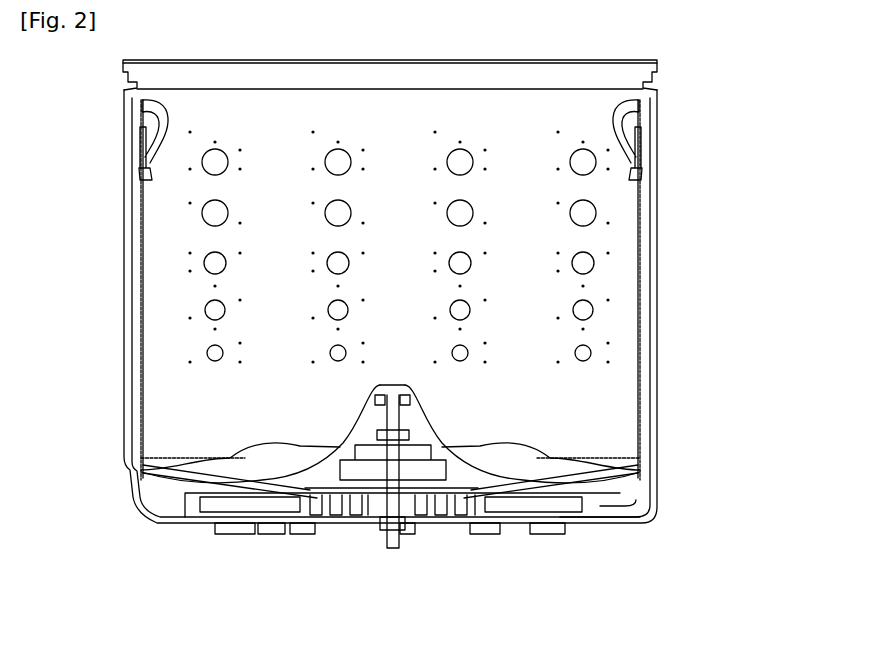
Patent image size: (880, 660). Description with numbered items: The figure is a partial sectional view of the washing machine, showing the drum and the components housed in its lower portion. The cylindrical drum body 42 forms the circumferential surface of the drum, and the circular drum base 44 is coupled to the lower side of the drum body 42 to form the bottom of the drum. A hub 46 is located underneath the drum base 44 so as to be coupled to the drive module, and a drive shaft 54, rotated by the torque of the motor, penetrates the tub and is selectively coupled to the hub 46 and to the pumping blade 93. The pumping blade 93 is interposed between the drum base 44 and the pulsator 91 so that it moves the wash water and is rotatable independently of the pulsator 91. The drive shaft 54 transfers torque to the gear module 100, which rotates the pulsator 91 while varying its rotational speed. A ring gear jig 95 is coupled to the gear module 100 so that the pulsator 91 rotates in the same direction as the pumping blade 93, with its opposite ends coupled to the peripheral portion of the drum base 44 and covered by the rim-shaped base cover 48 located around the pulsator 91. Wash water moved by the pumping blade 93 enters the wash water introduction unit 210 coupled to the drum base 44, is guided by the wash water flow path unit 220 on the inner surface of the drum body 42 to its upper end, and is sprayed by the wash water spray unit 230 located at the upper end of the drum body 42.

The wash water flow path unit 220 is at (650, 222).
The wash water spray unit 230 is at (634, 118).
The drum body 42 is at (620, 295).
The base cover 48 is at (600, 467).
The pulsator 91 is at (262, 465).
The ring gear jig 95 is at (285, 492).
The pumping blade 93 is at (210, 527).
The gear module 100 is at (377, 493).
The hub 46 is at (440, 528).
The drive shaft 54 is at (402, 550).
The wash water introduction unit 210 is at (620, 508).
The drum base 44 is at (597, 527).